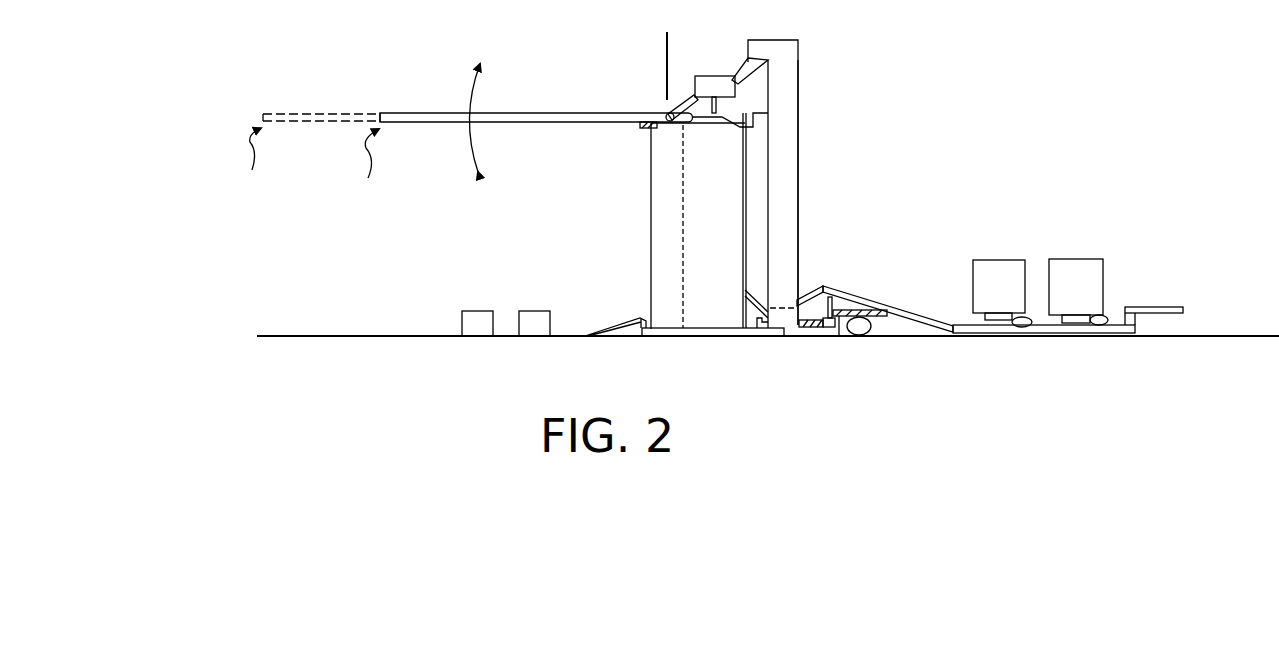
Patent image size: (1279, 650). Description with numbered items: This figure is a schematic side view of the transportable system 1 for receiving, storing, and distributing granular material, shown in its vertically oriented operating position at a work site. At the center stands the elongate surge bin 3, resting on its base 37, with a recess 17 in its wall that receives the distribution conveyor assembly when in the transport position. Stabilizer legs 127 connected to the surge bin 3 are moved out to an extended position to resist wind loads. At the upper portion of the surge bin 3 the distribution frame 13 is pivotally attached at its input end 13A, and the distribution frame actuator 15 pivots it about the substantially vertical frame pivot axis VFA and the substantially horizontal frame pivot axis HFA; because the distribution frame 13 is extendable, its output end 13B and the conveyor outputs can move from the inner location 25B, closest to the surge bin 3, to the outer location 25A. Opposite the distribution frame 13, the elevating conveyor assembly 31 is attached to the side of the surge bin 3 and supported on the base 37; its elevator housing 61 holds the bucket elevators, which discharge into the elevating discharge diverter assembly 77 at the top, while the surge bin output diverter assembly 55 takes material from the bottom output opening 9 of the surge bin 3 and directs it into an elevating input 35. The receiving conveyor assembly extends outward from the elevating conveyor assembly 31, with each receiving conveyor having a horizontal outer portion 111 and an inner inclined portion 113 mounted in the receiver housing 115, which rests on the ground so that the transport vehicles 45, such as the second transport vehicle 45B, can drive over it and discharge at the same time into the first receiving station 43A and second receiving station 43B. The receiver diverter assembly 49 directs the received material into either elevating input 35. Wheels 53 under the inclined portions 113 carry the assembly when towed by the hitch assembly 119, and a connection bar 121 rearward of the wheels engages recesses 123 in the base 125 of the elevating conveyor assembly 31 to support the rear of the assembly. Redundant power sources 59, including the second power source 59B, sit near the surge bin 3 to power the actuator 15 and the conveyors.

The transportable system 1 is at (1000, 50).
The surge bin 3 is at (651, 211).
The bottom output opening 9 is at (766, 292).
The distribution frame 13 is at (421, 113).
The input end of the distribution frame 13A is at (676, 111).
The output end of the distribution frame 13B is at (382, 113).
The distribution frame actuator 15 is at (645, 128).
The recess 17 is at (665, 252).
The outer location 25A is at (247, 165).
The inner location 25B is at (367, 165).
The elevating conveyor assembly 31 is at (822, 126).
The elevating input 35 is at (787, 330).
The base of the surge bin 37 is at (667, 338).
The first receiving station 43A is at (1103, 333).
The second receiving station 43B is at (1022, 333).
The transport vehicle 45 is at (1086, 259).
The second transport vehicle 45B is at (1000, 260).
The receiver diverter assembly 49 is at (803, 300).
The wheels 53 is at (872, 332).
The surge bin output diverter assembly 55 is at (731, 337).
The power source 59 is at (462, 312).
The second power source 59B is at (531, 311).
The elevator housing 61 is at (800, 183).
The elevating discharge diverter assembly 77 is at (715, 76).
The horizontal outer portion 111 is at (987, 335).
The inner inclined portion 113 is at (870, 300).
The receiver housing 115 is at (905, 313).
The hitch assembly 119 is at (1166, 307).
The connection bar 121 is at (808, 322).
The recesses 123 is at (823, 330).
The base of the elevating conveyor assembly 125 is at (830, 340).
The stabilizer legs 127 is at (626, 324).
The vertical frame pivot axis VFA is at (666, 48).
The horizontal frame pivot axis HFA is at (660, 114).